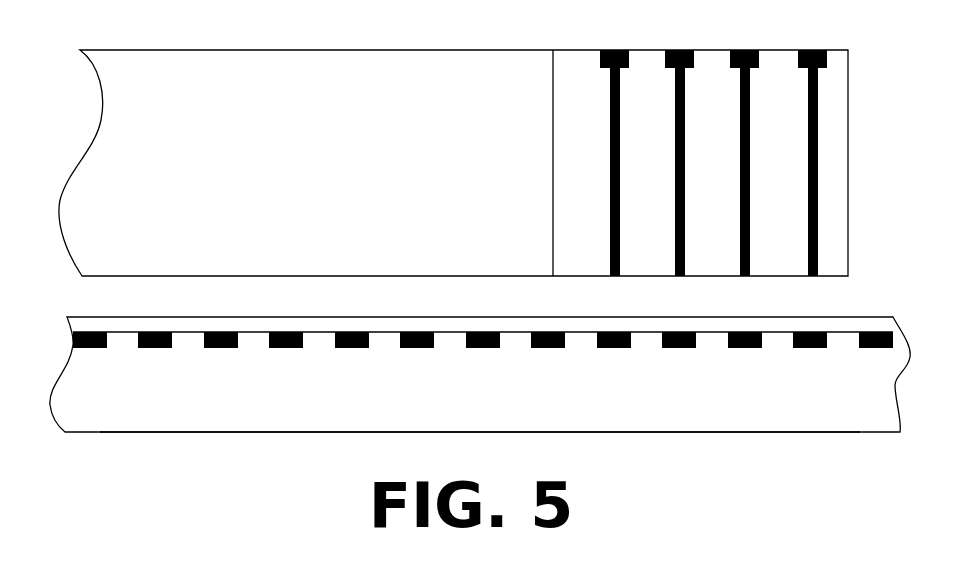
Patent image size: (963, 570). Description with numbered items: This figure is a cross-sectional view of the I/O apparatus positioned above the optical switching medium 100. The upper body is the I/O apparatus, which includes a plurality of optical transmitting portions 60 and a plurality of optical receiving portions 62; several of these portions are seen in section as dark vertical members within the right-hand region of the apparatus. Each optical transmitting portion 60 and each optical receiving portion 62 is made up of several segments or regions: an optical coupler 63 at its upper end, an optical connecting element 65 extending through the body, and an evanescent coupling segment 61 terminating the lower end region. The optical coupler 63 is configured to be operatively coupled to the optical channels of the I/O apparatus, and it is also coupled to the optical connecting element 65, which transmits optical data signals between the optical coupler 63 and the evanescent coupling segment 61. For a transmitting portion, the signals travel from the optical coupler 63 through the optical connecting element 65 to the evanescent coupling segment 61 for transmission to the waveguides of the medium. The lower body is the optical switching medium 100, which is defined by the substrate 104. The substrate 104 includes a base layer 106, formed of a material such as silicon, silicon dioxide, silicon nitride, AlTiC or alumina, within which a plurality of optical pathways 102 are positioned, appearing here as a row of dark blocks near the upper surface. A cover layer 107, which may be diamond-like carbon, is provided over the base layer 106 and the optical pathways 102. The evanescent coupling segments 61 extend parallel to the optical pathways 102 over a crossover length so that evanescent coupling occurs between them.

The optical transmitting portion 60 is at (683, 98).
The evanescent coupling segment 61 is at (813, 276).
The optical receiving portion 62 is at (615, 168).
The optical coupler 63 is at (808, 50).
The optical connecting element 65 is at (818, 222).
The optical switching medium 100 is at (68, 450).
The optical pathway 102 is at (795, 348).
The substrate 104 is at (152, 432).
The base layer 106 is at (302, 403).
The cover layer 107 is at (185, 327).